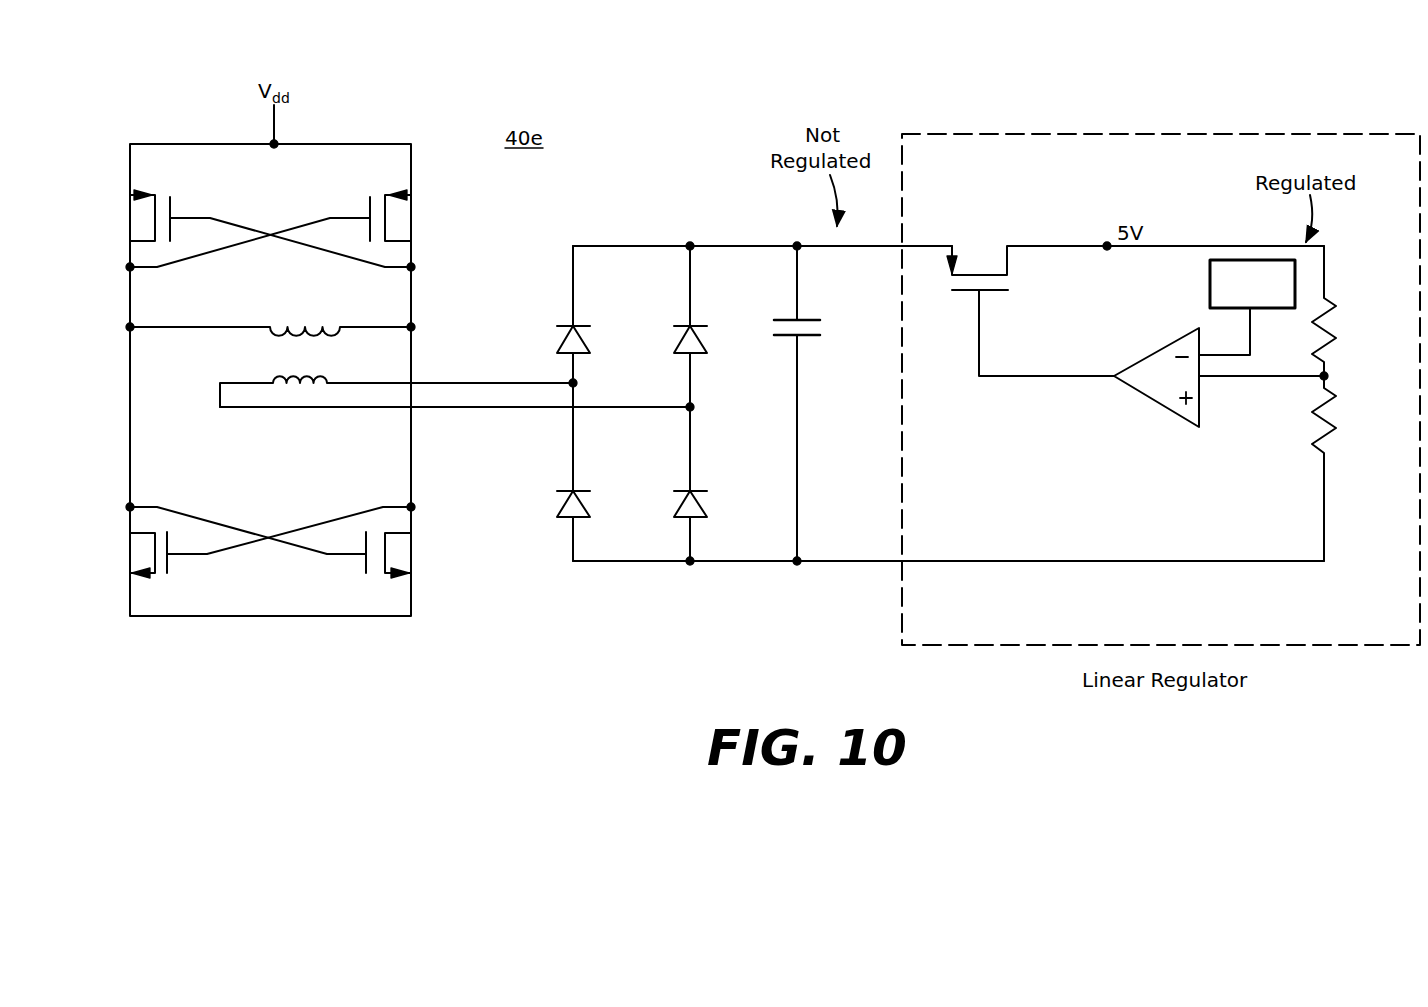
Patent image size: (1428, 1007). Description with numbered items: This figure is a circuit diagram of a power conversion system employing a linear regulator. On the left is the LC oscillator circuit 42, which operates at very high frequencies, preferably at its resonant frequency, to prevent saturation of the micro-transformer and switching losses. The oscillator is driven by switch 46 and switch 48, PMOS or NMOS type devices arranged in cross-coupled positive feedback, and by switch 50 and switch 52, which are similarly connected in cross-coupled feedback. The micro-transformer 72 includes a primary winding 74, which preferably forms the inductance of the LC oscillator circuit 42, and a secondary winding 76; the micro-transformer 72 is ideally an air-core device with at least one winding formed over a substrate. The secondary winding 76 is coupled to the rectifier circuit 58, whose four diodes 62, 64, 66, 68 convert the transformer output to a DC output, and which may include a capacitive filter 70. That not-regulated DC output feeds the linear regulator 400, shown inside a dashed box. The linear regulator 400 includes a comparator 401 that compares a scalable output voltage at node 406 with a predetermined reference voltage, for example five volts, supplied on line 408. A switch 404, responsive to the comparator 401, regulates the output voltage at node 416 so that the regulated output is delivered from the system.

The LC oscillator circuit 42 is at (108, 408).
The switch 46 is at (171, 205).
The switch 48 is at (369, 205).
The switch 50 is at (168, 565).
The switch 52 is at (365, 562).
The micro-transformer 72 is at (253, 354).
The primary winding 74 is at (296, 322).
The secondary winding 76 is at (322, 377).
The rectifier circuit 58 is at (627, 574).
The diode 62 is at (590, 345).
The diode 64 is at (706, 345).
The diode 66 is at (589, 505).
The diode 68 is at (705, 506).
The capacitive filter 70 is at (810, 337).
The linear regulator 400 is at (900, 601).
The comparator 401 is at (1150, 400).
The switch 404 is at (980, 274).
The node 406 is at (1327, 377).
The line 408 is at (1247, 325).
The node 416 is at (1107, 246).